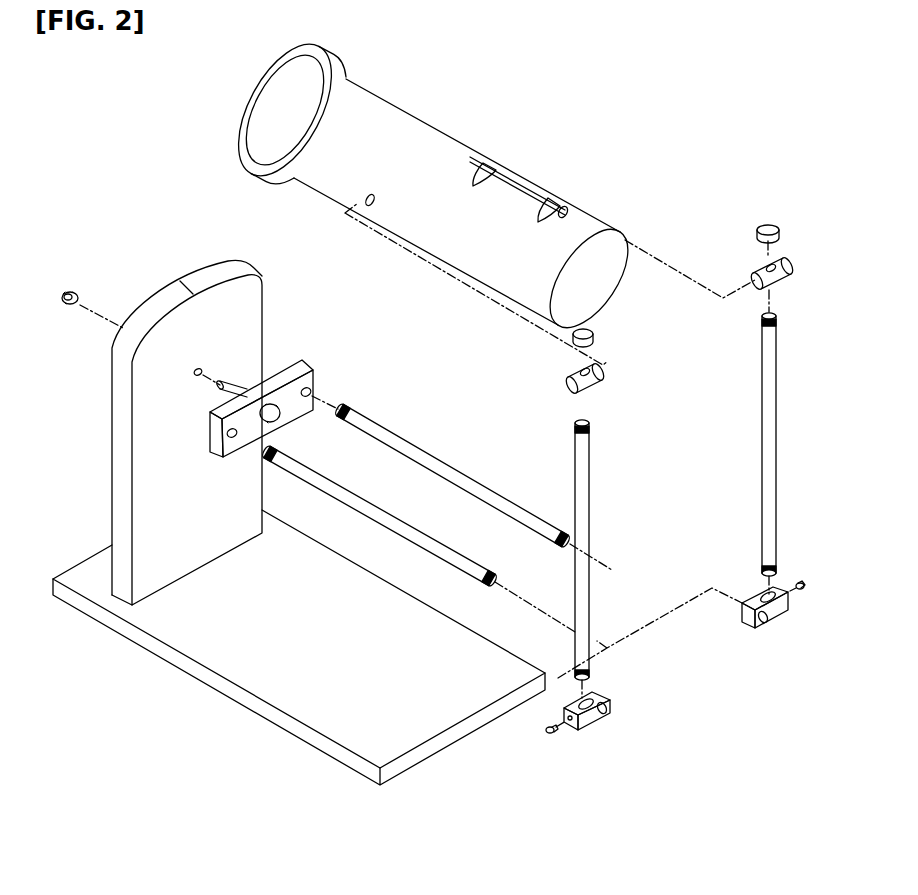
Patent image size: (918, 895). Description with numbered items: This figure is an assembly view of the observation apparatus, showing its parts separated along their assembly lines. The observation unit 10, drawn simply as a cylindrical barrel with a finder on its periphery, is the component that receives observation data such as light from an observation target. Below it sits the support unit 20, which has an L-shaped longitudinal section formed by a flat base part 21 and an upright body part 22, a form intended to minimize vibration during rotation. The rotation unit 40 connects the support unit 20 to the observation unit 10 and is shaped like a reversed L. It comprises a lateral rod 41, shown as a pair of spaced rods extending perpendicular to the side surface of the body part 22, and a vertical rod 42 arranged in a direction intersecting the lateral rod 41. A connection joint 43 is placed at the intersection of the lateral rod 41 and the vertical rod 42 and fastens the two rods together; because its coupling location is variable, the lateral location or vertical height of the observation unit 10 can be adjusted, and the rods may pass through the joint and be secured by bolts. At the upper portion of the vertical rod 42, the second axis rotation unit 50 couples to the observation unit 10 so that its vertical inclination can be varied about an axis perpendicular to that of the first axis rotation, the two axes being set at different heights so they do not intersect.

The observation unit 10 is at (523, 190).
The support unit 20 is at (295, 522).
The base part 21 is at (230, 660).
The body part 22 is at (150, 455).
The rotation unit 40 is at (494, 535).
The lateral rod 41 is at (378, 518).
The vertical rod 42 is at (582, 644).
The connection joint 43 is at (657, 680).
The second axis rotation unit 50 is at (590, 447).